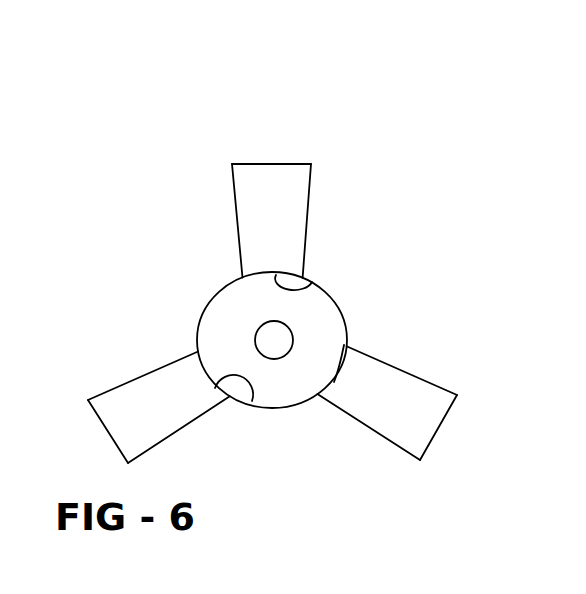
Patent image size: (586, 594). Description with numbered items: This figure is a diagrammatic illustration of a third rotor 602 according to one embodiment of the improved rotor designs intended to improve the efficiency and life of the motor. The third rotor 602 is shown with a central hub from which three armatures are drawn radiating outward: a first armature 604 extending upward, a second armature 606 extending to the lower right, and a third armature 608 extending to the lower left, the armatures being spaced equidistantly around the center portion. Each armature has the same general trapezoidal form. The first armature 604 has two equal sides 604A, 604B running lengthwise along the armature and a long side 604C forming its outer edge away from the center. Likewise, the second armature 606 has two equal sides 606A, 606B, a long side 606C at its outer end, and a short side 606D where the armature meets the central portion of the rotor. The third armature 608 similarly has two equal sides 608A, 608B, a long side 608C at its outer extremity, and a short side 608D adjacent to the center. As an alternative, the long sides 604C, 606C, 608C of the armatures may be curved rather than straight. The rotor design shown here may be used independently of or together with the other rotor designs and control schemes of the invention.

The third rotor 602 is at (76, 165).
The first armature 604 is at (280, 172).
The equal side of first armature 604A is at (238, 227).
The equal side of first armature 604B is at (309, 195).
The long side of first armature 604C is at (283, 164).
The second armature 606 is at (384, 401).
The equal side of second armature 606A is at (362, 354).
The equal side of second armature 606B is at (353, 417).
The long side of second armature 606C is at (454, 410).
The short side of second armature 606D is at (344, 345).
The third armature 608 is at (151, 384).
The equal side of third armature 608A is at (186, 357).
The equal side of third armature 608B is at (163, 441).
The long side of third armature 608C is at (94, 414).
The short side of third armature 608D is at (252, 401).